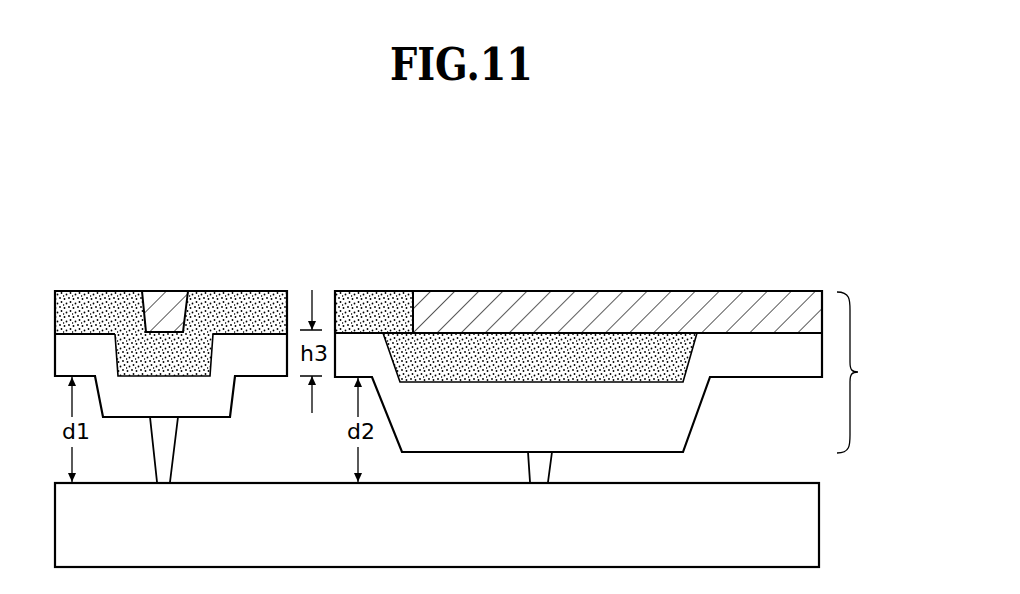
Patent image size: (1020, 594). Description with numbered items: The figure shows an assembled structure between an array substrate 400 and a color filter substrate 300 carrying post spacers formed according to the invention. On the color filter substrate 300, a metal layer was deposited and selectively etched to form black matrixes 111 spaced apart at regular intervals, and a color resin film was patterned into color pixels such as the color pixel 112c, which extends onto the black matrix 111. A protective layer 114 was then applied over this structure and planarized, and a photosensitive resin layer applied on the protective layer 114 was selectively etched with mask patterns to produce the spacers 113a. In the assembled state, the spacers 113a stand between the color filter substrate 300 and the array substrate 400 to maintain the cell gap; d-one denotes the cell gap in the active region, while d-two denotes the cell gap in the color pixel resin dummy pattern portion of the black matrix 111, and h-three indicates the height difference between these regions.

The black matrix 111 is at (163, 300).
The color pixel 112c is at (85, 298).
The spacer 113a is at (173, 440).
The protective layer 114 is at (257, 353).
The color filter substrate 300 is at (874, 372).
The array substrate 400 is at (807, 528).